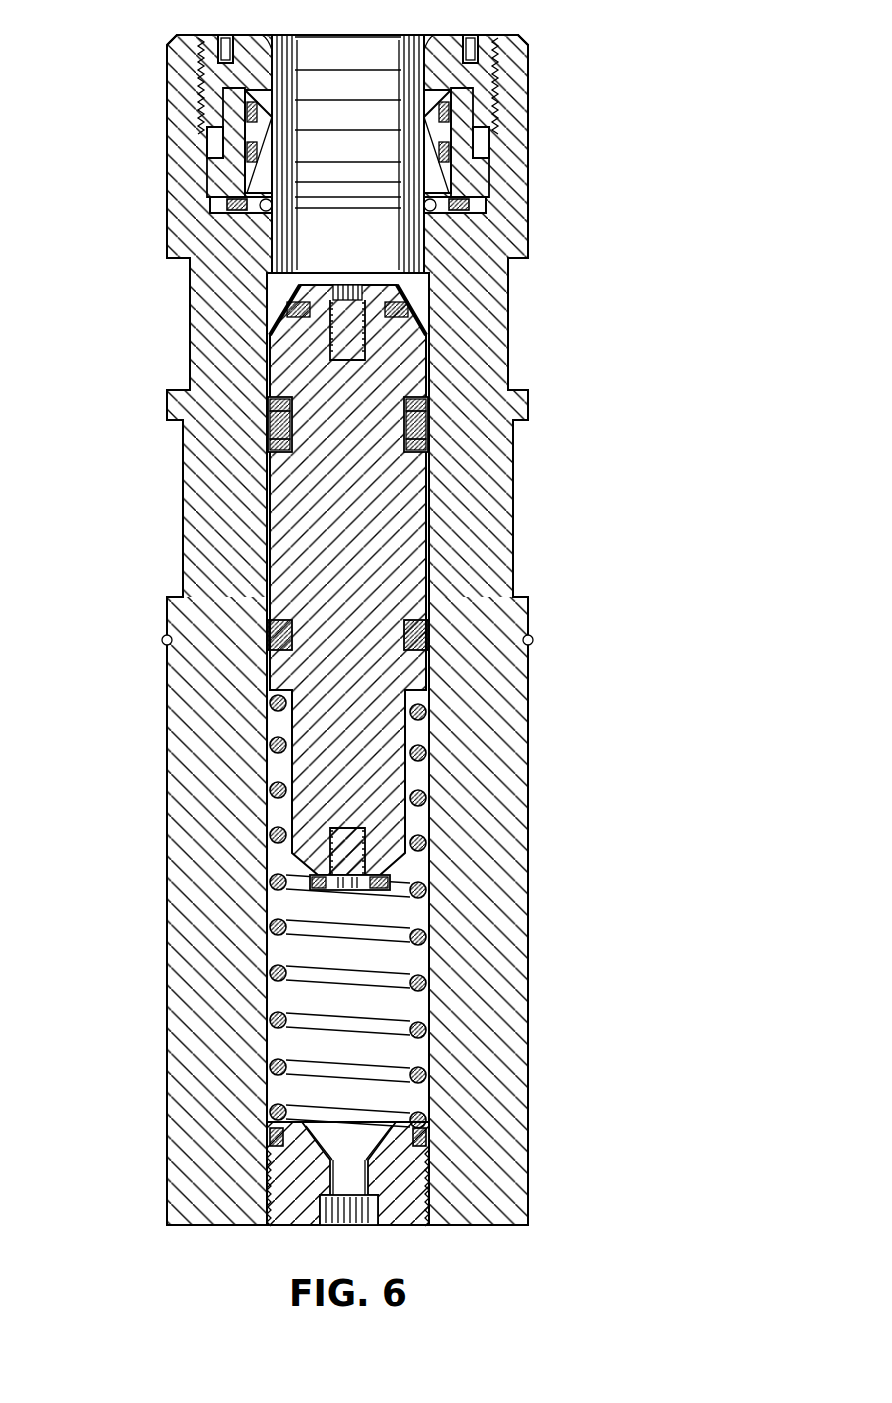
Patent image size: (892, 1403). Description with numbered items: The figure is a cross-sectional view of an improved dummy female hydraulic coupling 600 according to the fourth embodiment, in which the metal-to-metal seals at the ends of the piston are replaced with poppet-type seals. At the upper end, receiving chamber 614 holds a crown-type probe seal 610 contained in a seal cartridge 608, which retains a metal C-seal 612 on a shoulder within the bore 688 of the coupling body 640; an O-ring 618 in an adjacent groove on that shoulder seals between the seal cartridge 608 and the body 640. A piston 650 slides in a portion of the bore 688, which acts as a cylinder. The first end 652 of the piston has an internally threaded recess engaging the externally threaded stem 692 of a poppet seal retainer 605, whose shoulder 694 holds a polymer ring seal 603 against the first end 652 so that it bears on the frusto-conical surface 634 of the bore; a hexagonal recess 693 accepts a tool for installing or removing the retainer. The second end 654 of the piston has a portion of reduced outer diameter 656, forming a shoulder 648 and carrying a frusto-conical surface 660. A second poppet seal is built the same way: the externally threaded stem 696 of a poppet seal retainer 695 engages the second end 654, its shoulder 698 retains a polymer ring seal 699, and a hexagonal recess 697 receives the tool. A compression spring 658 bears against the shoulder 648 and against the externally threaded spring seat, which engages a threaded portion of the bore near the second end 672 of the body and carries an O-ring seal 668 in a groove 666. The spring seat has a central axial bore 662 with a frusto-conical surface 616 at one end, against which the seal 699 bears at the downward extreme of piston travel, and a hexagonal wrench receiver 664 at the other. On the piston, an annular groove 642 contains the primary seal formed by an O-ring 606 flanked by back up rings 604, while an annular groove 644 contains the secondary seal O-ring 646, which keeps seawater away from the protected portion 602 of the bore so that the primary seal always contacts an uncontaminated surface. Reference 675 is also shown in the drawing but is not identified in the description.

The dummy female hydraulic coupling 600 is at (654, 156).
The protected portion of bore 602 is at (430, 540).
The polymer ring seal 603 is at (298, 306).
The back up rings 604 is at (425, 403).
The poppet seal retainer 605 is at (405, 298).
The O-ring 606 is at (275, 432).
The seal cartridge 608 is at (197, 88).
The crown-type probe seal 610 is at (530, 140).
The metal C-seal 612 is at (455, 222).
The receiving chamber 614 is at (356, 58).
The frusto-conical surface 616 is at (385, 1122).
The O-ring 618 is at (462, 204).
The frusto-conical surface 634 is at (410, 322).
The coupling body 640 is at (200, 538).
The annular groove 642 is at (427, 477).
The annular groove 644 is at (527, 688).
The O-ring 646 is at (410, 650).
The shoulder 648 is at (280, 702).
The piston 650 is at (280, 487).
The first end of piston 652 is at (405, 268).
The second end of piston 654 is at (388, 865).
The portion of reduced outer diameter 656 is at (432, 768).
The compression spring 658 is at (428, 985).
The frusto-conical surface 660 is at (320, 860).
The central axial bore 662 is at (322, 1185).
The hexagonal wrench receiver 664 is at (375, 1207).
The groove 666 is at (272, 1150).
The O-ring seal 668 is at (425, 1140).
The second end of coupling body 672 is at (230, 1225).
The inlet fitting 675 is at (225, 34).
The bore 688 is at (376, 245).
The externally threaded stem 692 is at (330, 352).
The hexagonal recess 693 is at (348, 290).
The shoulder 694 is at (262, 262).
The poppet seal retainer 695 is at (328, 890).
The externally threaded stem 696 is at (365, 835).
The hexagonal recess 697 is at (362, 897).
The shoulder 698 is at (385, 882).
The polymer ring seal 699 is at (316, 880).